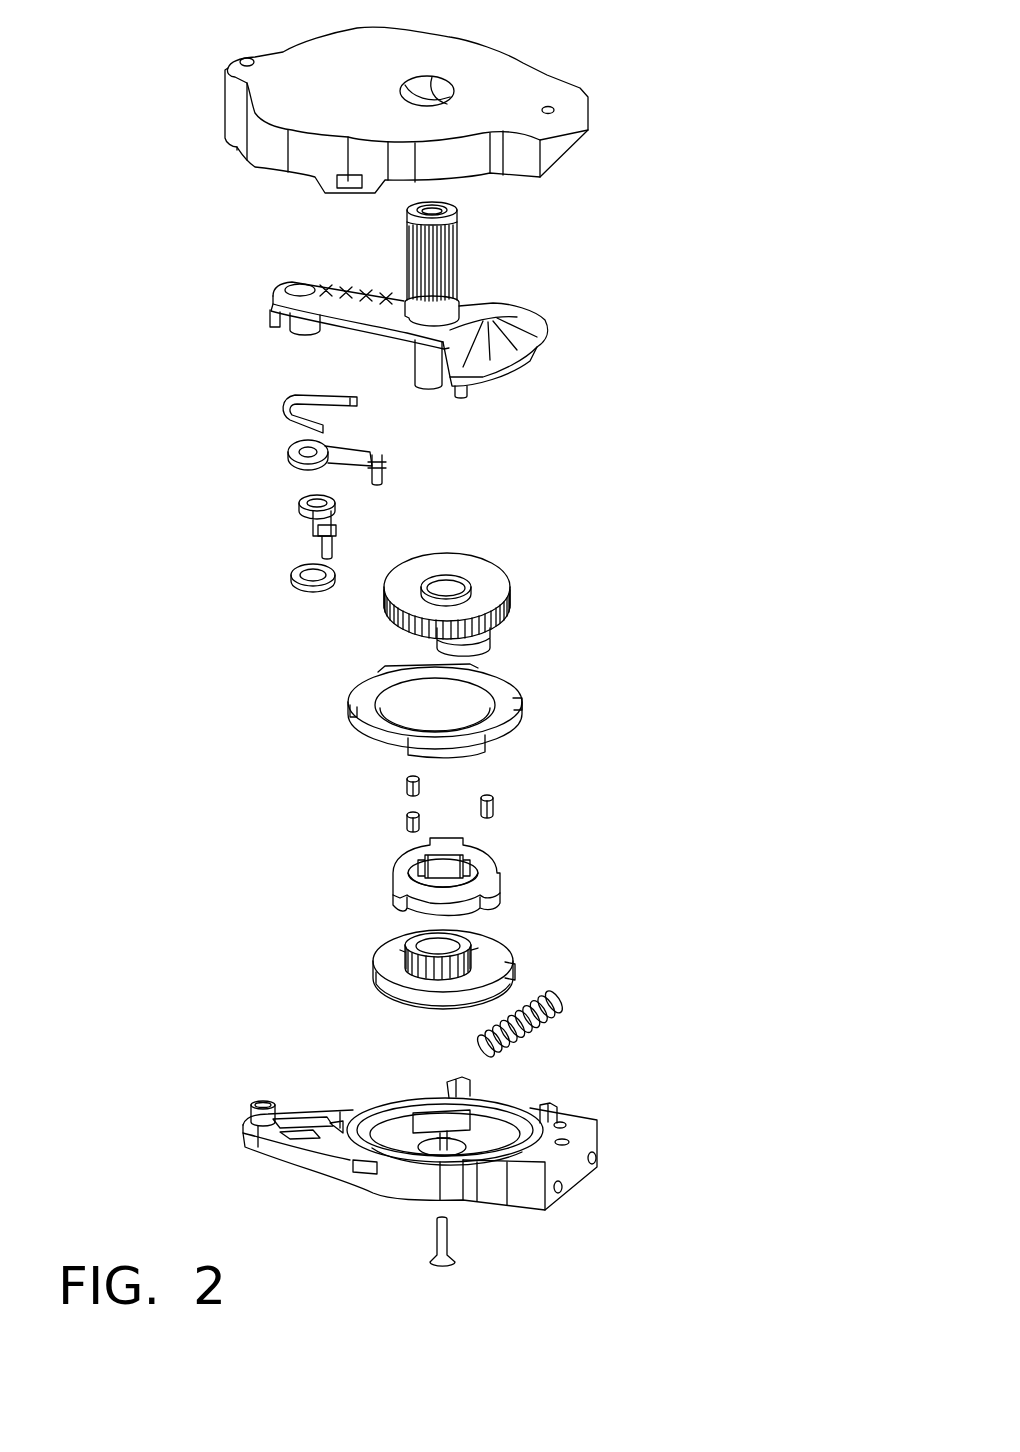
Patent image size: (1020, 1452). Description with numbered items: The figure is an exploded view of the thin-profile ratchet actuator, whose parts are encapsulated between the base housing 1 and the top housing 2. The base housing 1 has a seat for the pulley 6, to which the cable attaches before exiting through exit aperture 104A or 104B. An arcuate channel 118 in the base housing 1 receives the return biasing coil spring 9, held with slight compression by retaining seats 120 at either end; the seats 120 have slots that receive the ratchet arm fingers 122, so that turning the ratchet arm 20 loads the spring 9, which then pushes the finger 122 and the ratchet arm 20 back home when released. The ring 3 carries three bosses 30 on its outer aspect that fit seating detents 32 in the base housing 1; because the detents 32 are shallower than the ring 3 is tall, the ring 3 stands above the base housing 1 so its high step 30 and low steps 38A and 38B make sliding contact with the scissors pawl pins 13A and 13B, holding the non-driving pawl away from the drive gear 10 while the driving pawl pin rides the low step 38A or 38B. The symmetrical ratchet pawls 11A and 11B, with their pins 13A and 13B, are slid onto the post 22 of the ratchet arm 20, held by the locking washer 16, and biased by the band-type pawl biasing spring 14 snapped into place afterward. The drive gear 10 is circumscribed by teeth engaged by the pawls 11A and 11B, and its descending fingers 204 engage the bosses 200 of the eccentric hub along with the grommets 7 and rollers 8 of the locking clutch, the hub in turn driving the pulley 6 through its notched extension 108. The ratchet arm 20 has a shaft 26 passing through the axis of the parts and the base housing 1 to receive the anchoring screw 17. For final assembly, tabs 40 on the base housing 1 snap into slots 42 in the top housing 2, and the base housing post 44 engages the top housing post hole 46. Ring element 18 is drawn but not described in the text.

The base housing 1 is at (786, 1226).
The top housing 2 is at (528, 70).
The ring 3 is at (220, 720).
The pulley 6 is at (405, 990).
The grommets 7 is at (492, 795).
The rollers 8 is at (494, 803).
The return biasing coil spring 9 is at (560, 1012).
The drive gear 10 is at (478, 570).
The ratchet pawl 11A is at (299, 503).
The ratchet pawl 11B is at (295, 452).
The scissors pawl pin 13A is at (336, 528).
The scissors pawl pin 13B is at (380, 455).
The pawl biasing spring 14 is at (300, 402).
The locking washer 16 is at (293, 576).
The anchoring screw 17 is at (437, 1242).
The ring 18 is at (487, 690).
The ratchet arm 20 is at (547, 262).
The post 22 is at (292, 328).
The shaft 26 is at (422, 370).
The bosses 30 is at (352, 695).
The seating detents 32 is at (483, 1105).
The detent 38A is at (380, 740).
The detent 38B is at (410, 668).
The tabs 40 is at (365, 1175).
The slots 42 is at (345, 190).
The base housing post 44 is at (252, 1110).
The top housing post hole 46 is at (243, 58).
The exit aperture 104A is at (562, 1187).
The exit aperture 104B is at (598, 1158).
The notched extension 108 is at (415, 948).
The arcuate channel 118 is at (565, 1122).
The retaining seats 120 is at (556, 1105).
The ratchet arm fingers 122 is at (470, 390).
The bosses 200 is at (495, 885).
The fingers 204 is at (486, 640).